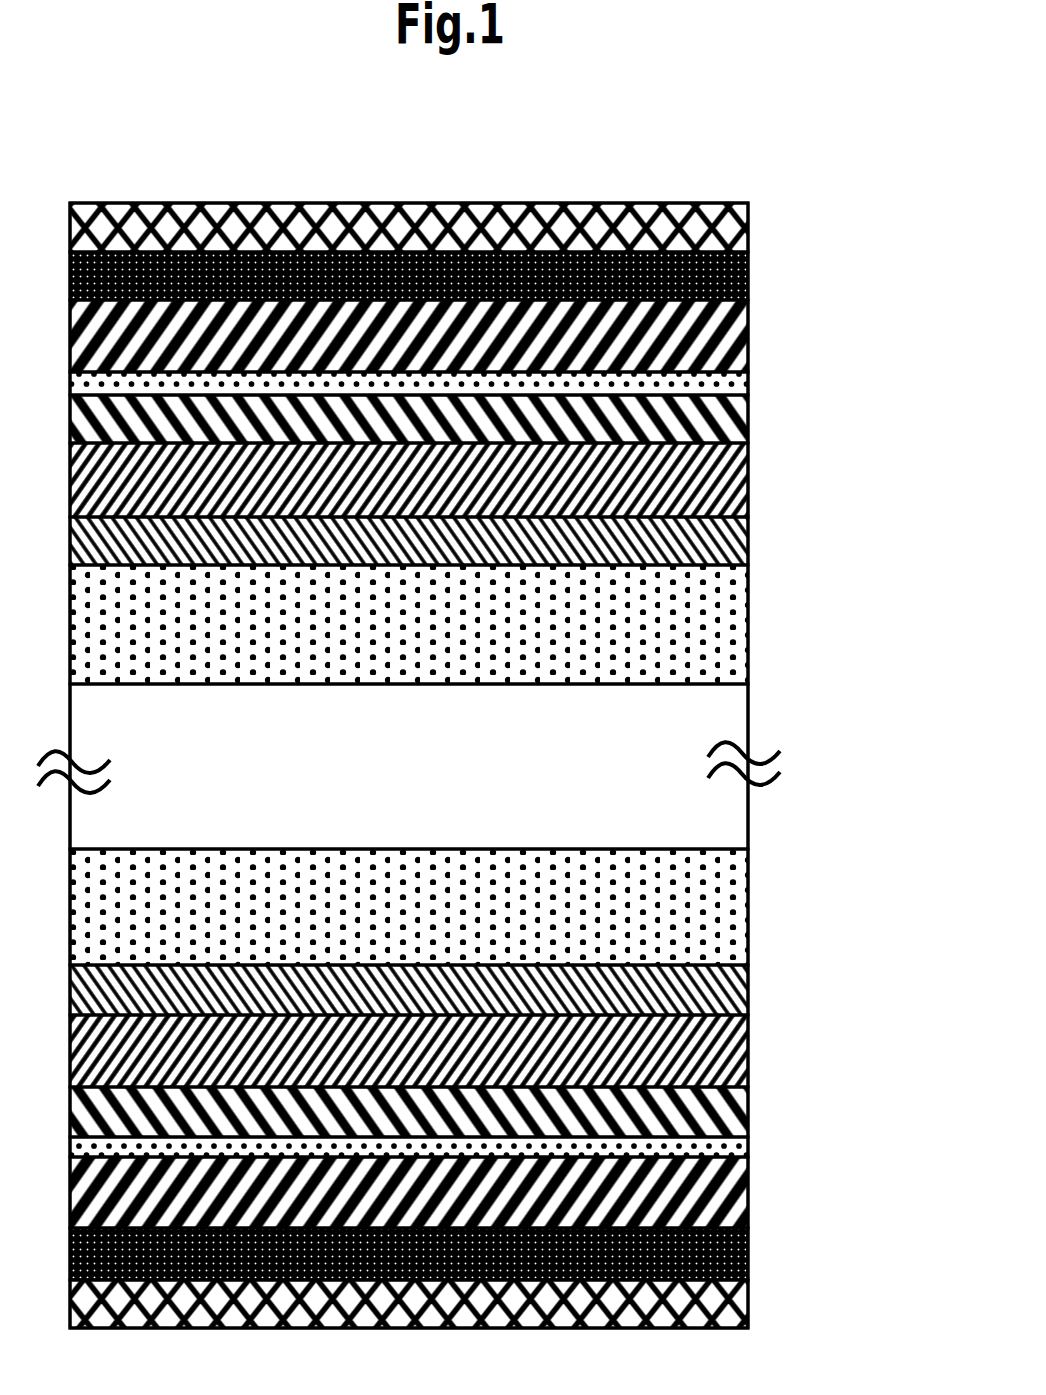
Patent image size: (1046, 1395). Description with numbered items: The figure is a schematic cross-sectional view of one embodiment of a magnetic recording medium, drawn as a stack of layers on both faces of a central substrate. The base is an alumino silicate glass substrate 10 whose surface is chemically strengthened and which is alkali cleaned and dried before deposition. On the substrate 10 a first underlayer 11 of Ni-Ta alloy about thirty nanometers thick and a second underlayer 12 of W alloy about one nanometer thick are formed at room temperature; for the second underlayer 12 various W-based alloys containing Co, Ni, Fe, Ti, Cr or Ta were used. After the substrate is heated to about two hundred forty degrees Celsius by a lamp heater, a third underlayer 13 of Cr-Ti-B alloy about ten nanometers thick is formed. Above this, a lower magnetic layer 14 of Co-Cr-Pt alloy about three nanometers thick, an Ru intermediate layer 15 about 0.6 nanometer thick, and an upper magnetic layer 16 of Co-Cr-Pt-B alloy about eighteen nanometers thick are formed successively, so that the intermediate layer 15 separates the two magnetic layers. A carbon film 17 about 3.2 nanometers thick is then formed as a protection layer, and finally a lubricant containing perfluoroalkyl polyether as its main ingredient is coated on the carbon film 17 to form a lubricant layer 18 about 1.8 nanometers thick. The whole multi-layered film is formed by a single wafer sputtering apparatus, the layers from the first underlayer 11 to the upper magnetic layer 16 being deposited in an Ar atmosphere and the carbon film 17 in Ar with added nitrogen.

The alumino silicate glass substrate 10 is at (708, 717).
The first underlayer 11 is at (712, 620).
The second underlayer 12 is at (712, 530).
The third underlayer 13 is at (715, 482).
The lower magnetic layer 14 is at (718, 418).
The intermediate layer 15 is at (715, 383).
The upper magnetic layer 16 is at (710, 325).
The carbon film 17 is at (748, 265).
The lubricant layer 18 is at (730, 218).